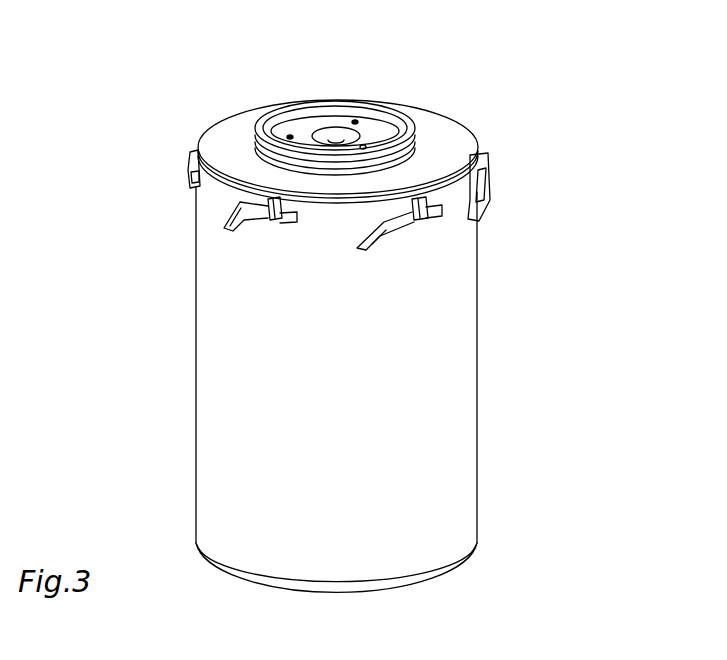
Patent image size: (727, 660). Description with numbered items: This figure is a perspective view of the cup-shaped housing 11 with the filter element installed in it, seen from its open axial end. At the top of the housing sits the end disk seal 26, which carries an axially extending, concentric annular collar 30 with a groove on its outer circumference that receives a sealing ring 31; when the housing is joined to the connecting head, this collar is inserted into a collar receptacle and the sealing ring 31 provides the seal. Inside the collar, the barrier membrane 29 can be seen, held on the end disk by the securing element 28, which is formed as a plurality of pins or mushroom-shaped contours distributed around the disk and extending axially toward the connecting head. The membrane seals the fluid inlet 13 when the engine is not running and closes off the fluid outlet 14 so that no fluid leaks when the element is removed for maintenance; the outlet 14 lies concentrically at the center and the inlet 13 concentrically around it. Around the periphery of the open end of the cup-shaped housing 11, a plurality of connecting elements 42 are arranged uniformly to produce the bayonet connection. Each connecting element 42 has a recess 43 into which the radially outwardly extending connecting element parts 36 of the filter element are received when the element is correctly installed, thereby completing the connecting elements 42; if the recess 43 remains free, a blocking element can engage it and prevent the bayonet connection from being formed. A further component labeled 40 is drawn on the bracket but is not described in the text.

The cup-shaped housing 11 is at (477, 390).
The inlet 13 is at (275, 133).
The outlet 14 is at (333, 135).
The end disk seal 26 is at (457, 142).
The securing element 28 is at (355, 120).
The barrier membrane 29 is at (377, 132).
The annular collar 30 is at (315, 102).
The sealing ring 31 is at (410, 143).
The connecting element parts 36 is at (272, 222).
The bracket arm 40 is at (420, 227).
The connecting elements 42 is at (258, 220).
The recess 43 is at (272, 235).